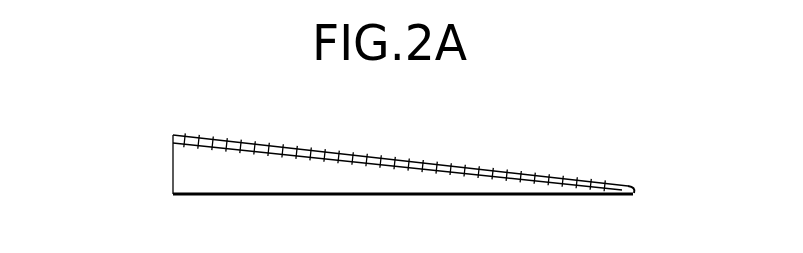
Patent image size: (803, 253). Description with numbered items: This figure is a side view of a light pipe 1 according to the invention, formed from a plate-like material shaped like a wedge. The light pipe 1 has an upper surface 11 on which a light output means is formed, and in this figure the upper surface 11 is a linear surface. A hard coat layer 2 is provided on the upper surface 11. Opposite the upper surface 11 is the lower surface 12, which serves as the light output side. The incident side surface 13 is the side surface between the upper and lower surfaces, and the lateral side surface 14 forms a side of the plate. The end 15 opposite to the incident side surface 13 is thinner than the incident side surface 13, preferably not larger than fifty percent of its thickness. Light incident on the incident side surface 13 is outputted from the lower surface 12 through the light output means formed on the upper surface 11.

The light pipe 1 is at (127, 139).
The hard coat layer 2 is at (460, 164).
The upper surface 11 is at (263, 146).
The lower surface 12 is at (266, 195).
The incident side surface 13 is at (173, 168).
The lateral side surface 14 is at (349, 182).
The end opposite to the incident side surface 15 is at (638, 192).